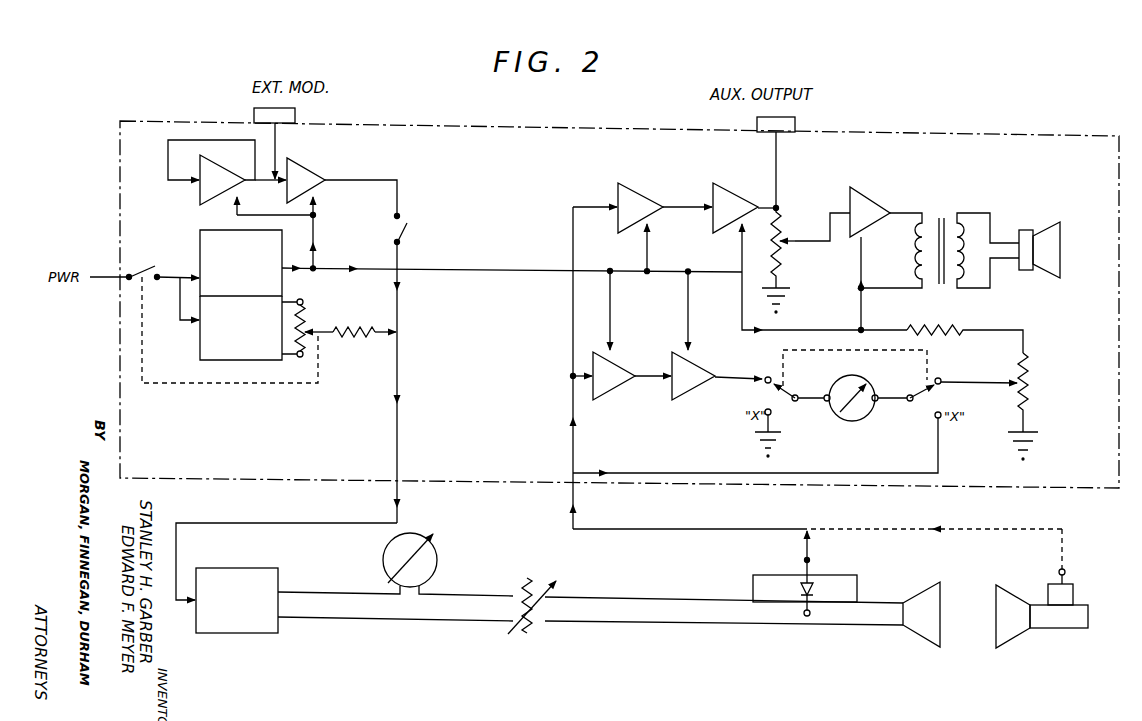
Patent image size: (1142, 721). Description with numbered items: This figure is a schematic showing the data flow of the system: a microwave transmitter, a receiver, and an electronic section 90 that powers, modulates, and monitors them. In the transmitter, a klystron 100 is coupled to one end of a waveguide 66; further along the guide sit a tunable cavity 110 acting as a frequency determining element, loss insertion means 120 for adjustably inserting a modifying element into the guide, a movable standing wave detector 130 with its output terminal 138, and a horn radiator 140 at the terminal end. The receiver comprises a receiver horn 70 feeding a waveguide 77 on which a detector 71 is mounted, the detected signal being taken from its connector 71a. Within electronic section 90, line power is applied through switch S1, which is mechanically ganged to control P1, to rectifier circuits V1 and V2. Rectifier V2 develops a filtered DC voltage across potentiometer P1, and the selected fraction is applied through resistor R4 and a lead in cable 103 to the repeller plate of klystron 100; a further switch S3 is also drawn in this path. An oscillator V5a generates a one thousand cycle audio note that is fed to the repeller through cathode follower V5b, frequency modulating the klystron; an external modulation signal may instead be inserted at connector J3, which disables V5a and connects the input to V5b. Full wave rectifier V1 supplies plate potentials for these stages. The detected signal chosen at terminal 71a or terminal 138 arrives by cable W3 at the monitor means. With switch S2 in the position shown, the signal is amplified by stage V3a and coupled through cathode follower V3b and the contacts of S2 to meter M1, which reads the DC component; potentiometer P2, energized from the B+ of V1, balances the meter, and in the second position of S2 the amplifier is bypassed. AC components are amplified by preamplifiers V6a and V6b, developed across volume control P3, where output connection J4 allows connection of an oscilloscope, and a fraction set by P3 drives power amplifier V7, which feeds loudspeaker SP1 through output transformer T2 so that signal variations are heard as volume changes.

The connector J3 is at (253, 114).
The output connection J4 is at (797, 126).
The electronic section 90 is at (528, 170).
The oscillator V5a is at (227, 177).
The cathode follower V5b is at (317, 213).
The full wave rectifier circuit V1 is at (241, 263).
The rectifier circuit V2 is at (241, 328).
The switch S1 is at (153, 266).
The modulation selector switch S3 is at (406, 232).
The potentiometer P1 is at (310, 326).
The resistor R4 is at (338, 338).
The preamplifier V6a is at (622, 228).
The preamplifier V6b is at (715, 227).
The power amplifier V7 is at (870, 260).
The volume control potentiometer P3 is at (783, 221).
The output transformer T2 is at (928, 216).
The loudspeaker SP1 is at (1056, 235).
The amplifier stage V3a is at (603, 335).
The cathode follower V3b is at (698, 334).
The switch S2 is at (792, 392).
The meter M1 is at (840, 413).
The potentiometer P2 is at (1031, 371).
The cable 103 is at (303, 523).
The klystron 100 is at (252, 610).
The tunable cavity 110 is at (438, 561).
The waveguide 66 is at (447, 621).
The loss insertion means 120 is at (513, 641).
The cable W3 is at (656, 530).
The output terminal 138 is at (810, 561).
The movable waveguide detector 130 is at (859, 573).
The radiator means 140 is at (922, 633).
The connector 71a is at (1068, 571).
The detector 71 is at (1069, 598).
The waveguide 77 is at (1053, 625).
The receiver horn 70 is at (1005, 638).